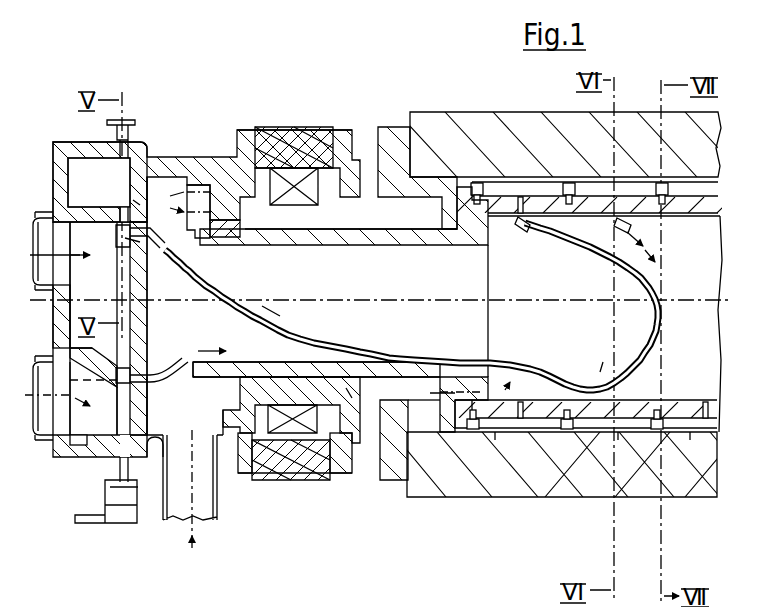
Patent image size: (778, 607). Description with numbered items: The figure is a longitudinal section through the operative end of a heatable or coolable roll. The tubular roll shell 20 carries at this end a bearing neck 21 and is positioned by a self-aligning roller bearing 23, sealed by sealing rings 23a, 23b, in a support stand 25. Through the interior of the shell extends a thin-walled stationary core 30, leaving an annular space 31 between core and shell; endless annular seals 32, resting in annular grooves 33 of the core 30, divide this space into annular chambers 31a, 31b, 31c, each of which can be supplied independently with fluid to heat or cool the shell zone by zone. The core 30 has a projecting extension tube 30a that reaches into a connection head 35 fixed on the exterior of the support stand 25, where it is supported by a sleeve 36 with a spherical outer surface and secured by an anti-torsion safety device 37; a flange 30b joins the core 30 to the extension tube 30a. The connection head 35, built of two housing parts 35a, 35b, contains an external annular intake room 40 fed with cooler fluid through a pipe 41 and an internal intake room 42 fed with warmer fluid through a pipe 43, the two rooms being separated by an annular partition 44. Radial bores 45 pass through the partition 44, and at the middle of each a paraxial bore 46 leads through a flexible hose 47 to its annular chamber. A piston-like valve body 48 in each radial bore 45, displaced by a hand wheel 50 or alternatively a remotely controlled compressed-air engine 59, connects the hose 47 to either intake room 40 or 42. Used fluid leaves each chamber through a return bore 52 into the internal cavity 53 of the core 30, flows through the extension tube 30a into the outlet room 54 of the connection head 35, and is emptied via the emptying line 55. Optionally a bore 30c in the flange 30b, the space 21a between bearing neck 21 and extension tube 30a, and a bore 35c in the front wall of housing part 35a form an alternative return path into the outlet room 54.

The tubular roll shell 20 is at (483, 123).
The bearing neck 21 is at (392, 127).
The space between bearing neck and extension tube 21a is at (372, 362).
The self-aligning roller bearing 23 is at (297, 170).
The sealing ring 23a is at (262, 480).
The sealing ring 23b is at (337, 477).
The support stand 25 is at (263, 127).
The stationary core 30 is at (680, 408).
The extension tube 30a is at (327, 246).
The flange 30b is at (445, 195).
The bore 30c is at (455, 450).
The annular space 31 is at (712, 190).
The annular chamber 31a is at (495, 432).
The annular chamber 31b is at (622, 432).
The annular chamber 31c is at (690, 432).
The annular peripheral seal 32 is at (552, 230).
The annular groove 33 is at (503, 226).
The connection head 35 is at (168, 140).
The housing part 35a is at (178, 158).
The housing part 35b is at (53, 312).
The bore 35c is at (220, 413).
The sleeve 36 is at (230, 240).
The anti-torsion safety device 37 is at (200, 185).
The external annular intake room 40 is at (103, 437).
The pipe 41 is at (40, 440).
The internal intake room 42 is at (107, 289).
The pipe 43 is at (45, 215).
The annular partition 44 is at (86, 207).
The radial bore 45 is at (122, 207).
The paraxial bore 46 is at (185, 198).
The flexible hose 47 is at (210, 306).
The piston-like valve body 48 is at (116, 238).
The hand wheel 50 is at (128, 121).
The return bore 52 is at (540, 432).
The internal cavity 53 is at (700, 216).
The outlet room 54 is at (182, 336).
The emptying line 55 is at (220, 508).
The compressed-air engine 59 is at (128, 523).